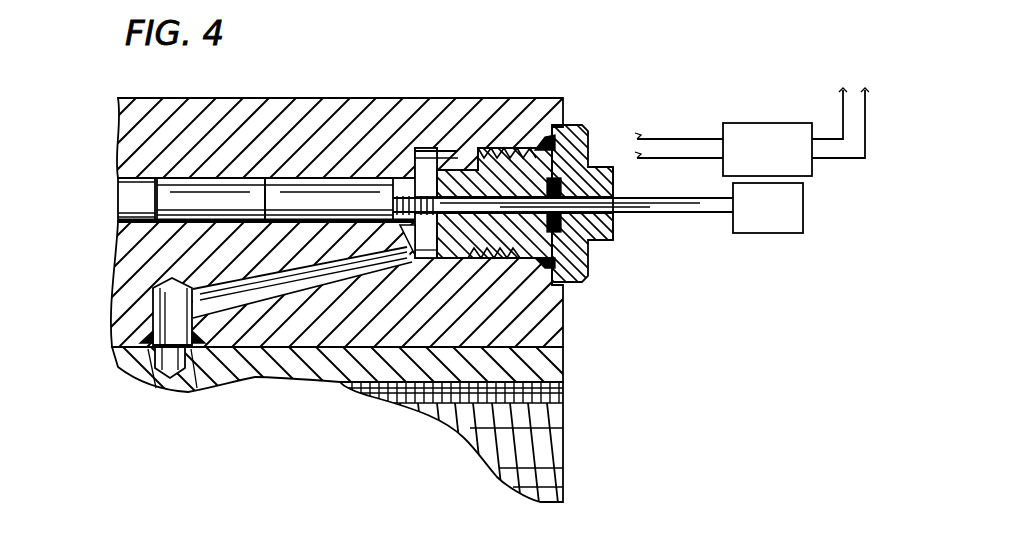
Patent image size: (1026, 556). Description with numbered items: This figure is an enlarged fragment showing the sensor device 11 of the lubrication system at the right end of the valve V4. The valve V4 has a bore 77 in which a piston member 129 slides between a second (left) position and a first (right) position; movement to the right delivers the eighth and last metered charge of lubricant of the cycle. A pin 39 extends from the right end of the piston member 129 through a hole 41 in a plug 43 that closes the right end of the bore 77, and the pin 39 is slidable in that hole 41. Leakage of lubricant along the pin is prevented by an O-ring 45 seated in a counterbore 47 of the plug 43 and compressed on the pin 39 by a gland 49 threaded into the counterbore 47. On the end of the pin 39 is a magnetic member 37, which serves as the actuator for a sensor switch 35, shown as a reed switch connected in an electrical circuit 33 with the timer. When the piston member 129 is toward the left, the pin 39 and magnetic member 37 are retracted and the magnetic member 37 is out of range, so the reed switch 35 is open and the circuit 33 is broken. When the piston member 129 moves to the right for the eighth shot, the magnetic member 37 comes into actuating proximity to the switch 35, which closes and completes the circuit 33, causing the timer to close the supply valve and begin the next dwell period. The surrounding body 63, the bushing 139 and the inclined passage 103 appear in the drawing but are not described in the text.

The sensor device 11 is at (678, 102).
The electrical circuit 33 is at (847, 158).
The sensor switch 35 is at (740, 135).
The magnetic member 37 is at (773, 233).
The pin 39 is at (668, 214).
The hole 41 is at (477, 190).
The plug 43 is at (568, 285).
The O-ring 45 is at (560, 183).
The counterbore 47 is at (567, 236).
The gland 49 is at (615, 184).
The housing block 63 is at (124, 122).
The bore 77 is at (240, 178).
The inclined passage 103 is at (274, 290).
The piston member 129 is at (114, 200).
The bushing 139 is at (355, 200).
The valve V4 is at (240, 97).